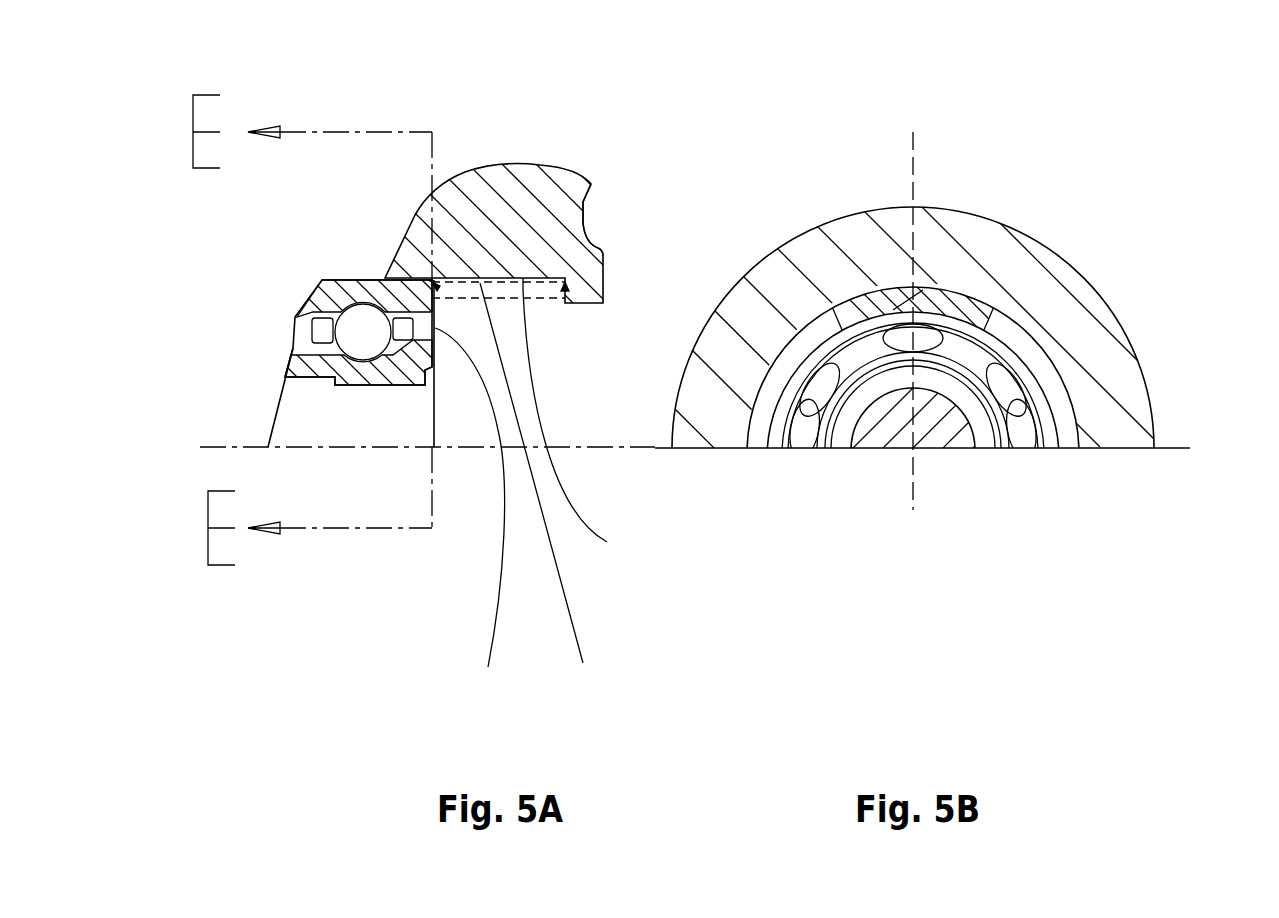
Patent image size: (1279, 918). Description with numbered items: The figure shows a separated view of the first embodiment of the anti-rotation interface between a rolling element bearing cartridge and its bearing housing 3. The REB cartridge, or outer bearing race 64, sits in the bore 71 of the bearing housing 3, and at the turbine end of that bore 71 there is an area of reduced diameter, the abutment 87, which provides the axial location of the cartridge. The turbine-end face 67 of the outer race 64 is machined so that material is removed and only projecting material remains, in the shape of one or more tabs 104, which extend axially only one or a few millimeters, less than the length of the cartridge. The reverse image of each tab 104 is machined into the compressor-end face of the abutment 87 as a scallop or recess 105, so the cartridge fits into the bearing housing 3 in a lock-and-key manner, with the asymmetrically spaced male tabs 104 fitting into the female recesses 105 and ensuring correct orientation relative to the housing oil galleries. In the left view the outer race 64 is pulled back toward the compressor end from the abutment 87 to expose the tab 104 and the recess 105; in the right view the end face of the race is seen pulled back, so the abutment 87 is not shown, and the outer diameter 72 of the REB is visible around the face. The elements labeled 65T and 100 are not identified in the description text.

In FIG. 5A, the bearing housing 3 is at (497, 240).
In FIG. 5B, the bearing housing 3 is at (705, 408).
In FIG. 5A, the outer race 64 is at (362, 288).
In FIG. 5A, the bearing inner ring 65T is at (357, 367).
In FIG. 5A, the turbine-end face 67 is at (470, 514).
In FIG. 5A, the bore 71 is at (588, 424).
In FIG. 5A, the outer diameter 72 is at (541, 491).
In FIG. 5A, the abutment 87 is at (606, 293).
In FIG. 5B, the wheel bearing assembly 100 is at (1185, 451).
In FIG. 5A, the tab 104 is at (432, 280).
In FIG. 5B, the tab 104 is at (903, 303).
In FIG. 5A, the scallop 105 is at (563, 275).